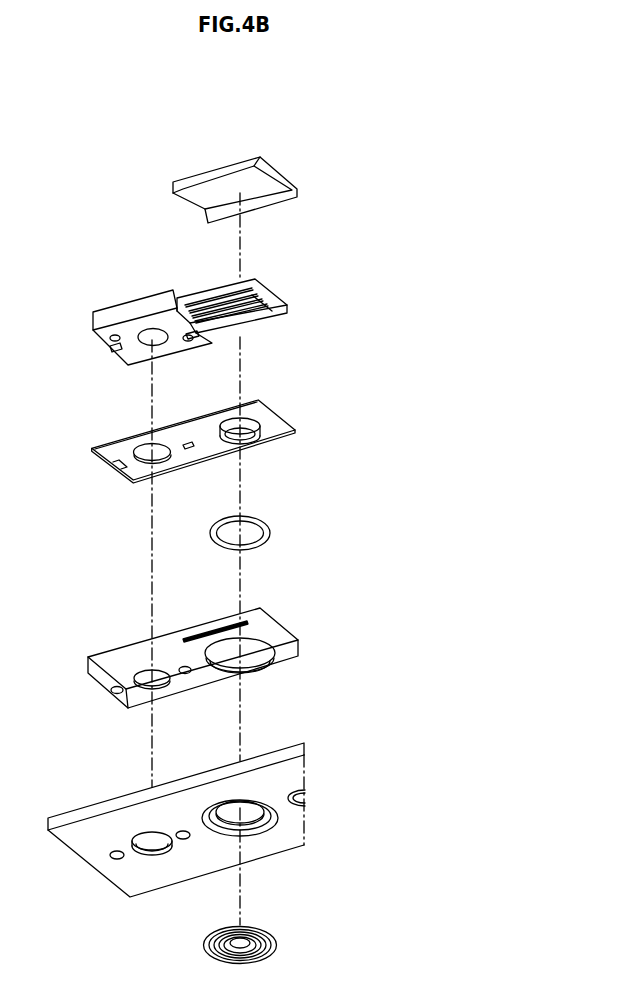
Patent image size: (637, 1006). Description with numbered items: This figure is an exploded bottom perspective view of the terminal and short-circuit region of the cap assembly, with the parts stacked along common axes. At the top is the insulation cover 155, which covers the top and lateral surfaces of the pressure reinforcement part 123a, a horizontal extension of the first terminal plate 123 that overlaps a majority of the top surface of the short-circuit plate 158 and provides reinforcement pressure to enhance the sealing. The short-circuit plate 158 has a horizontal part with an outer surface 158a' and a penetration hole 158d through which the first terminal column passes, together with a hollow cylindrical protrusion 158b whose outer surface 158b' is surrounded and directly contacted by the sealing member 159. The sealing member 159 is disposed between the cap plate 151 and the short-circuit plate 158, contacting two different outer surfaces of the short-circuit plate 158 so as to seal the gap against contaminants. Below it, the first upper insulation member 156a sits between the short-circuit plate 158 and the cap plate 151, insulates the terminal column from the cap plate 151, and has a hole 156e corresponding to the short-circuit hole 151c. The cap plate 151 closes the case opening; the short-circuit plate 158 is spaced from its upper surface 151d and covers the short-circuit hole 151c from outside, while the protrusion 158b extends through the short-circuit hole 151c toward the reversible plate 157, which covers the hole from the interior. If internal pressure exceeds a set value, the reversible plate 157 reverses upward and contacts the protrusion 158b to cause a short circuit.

The insulation cover 155 is at (223, 170).
The first terminal plate 123 is at (203, 306).
The pressure reinforcement part 123a is at (273, 290).
The short-circuit plate 158 is at (253, 451).
The outer surface of the horizontal part 158a' is at (239, 433).
The outer surface of the protrusion 158b' is at (303, 458).
The protrusion 158b is at (267, 463).
The penetration hole 158d is at (140, 460).
The sealing member 159 is at (270, 533).
The first upper insulation member 156a is at (232, 658).
The hole 156e is at (260, 662).
The cap plate 151 is at (209, 837).
The short-circuit hole 151c is at (248, 822).
The upper surface of the cap plate 151d is at (143, 857).
The reversible plate 157 is at (277, 943).